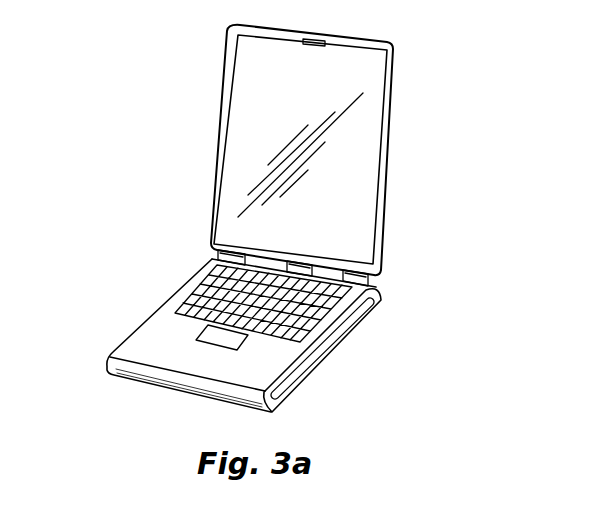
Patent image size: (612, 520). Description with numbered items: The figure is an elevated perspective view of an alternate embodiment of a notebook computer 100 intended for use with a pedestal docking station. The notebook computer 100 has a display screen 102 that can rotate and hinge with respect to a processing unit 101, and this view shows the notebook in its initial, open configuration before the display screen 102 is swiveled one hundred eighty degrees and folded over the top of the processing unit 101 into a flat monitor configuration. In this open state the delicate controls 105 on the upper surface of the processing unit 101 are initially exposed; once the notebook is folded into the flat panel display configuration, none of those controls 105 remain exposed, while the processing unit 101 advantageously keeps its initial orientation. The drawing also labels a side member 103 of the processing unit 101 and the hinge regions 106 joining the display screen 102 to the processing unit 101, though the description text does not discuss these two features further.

The notebook computer 100 is at (179, 136).
The processing unit 101 is at (145, 355).
The display screen 102 is at (248, 184).
The side member 103 is at (336, 383).
The controls 105 is at (203, 338).
The hinge 106 is at (215, 252).